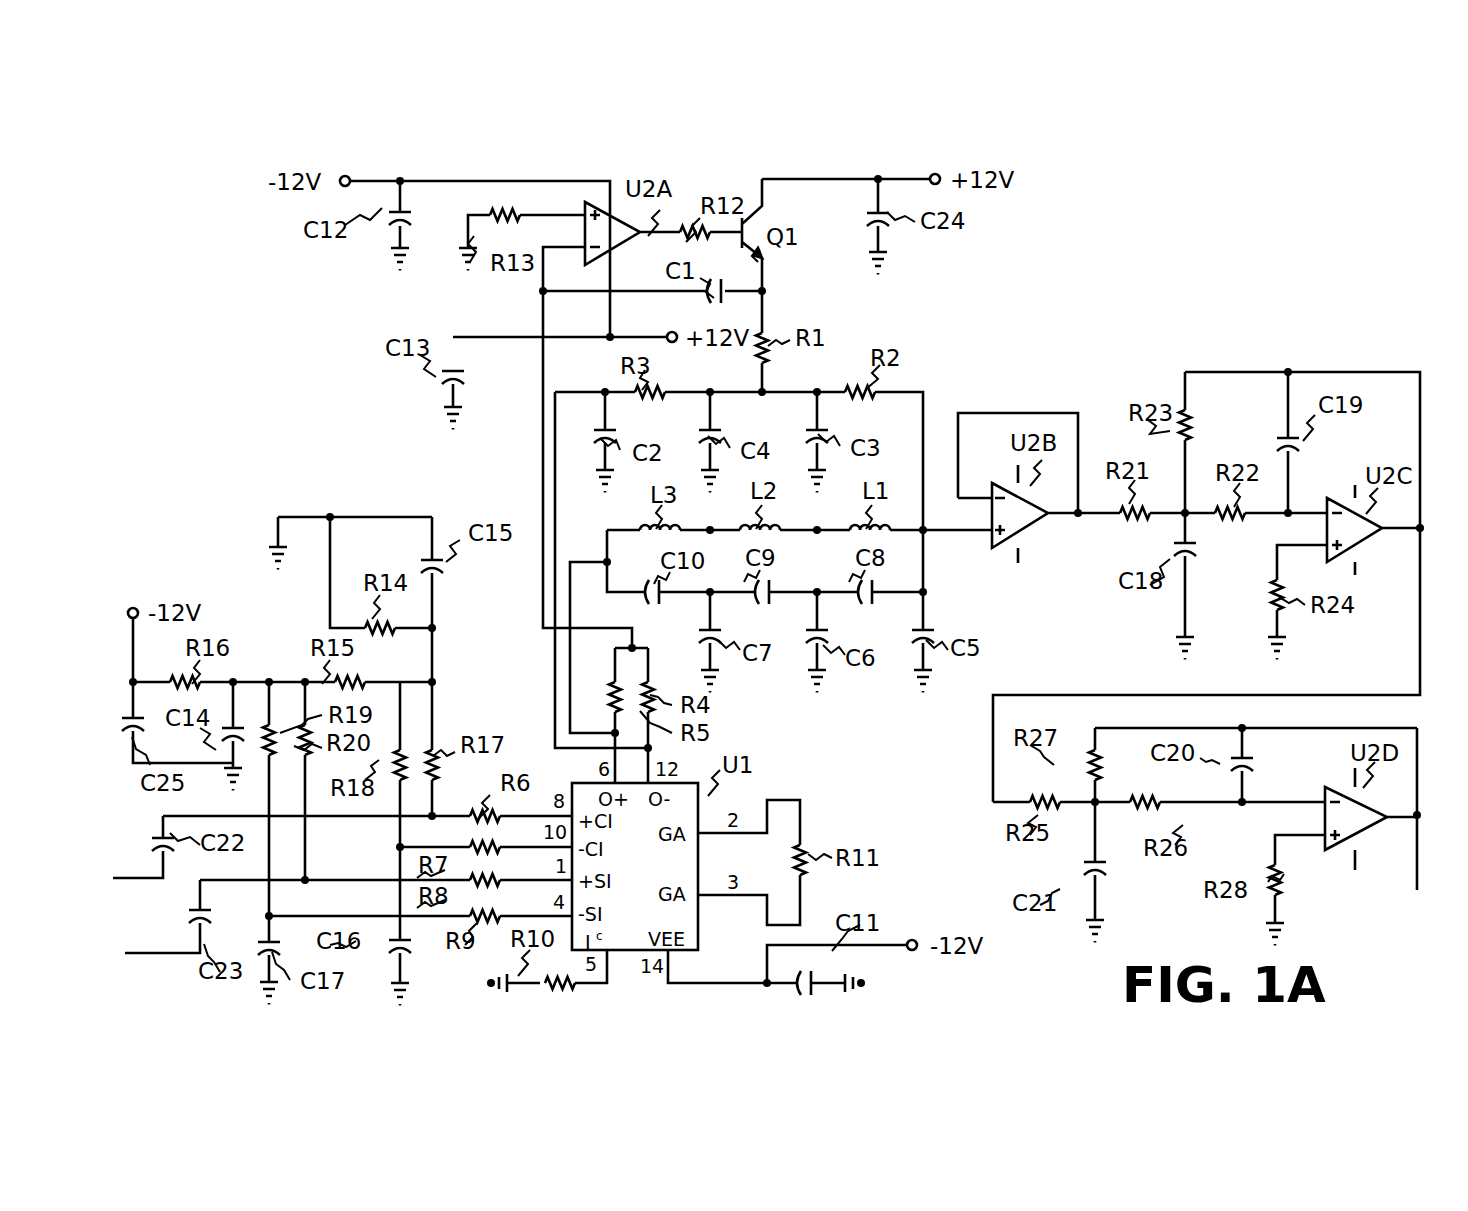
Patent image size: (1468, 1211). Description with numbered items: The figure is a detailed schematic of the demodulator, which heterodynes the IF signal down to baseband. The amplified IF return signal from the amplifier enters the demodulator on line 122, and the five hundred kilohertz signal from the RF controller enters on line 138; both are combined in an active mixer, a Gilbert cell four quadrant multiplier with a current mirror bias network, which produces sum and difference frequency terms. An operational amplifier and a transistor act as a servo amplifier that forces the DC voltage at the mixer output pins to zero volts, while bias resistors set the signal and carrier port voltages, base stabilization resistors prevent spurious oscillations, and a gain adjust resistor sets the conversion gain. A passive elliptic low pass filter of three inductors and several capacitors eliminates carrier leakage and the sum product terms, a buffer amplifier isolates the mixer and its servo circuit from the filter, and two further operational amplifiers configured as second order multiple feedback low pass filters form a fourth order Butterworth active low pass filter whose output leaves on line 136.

The line 138 is at (145, 880).
The line 122 is at (160, 953).
The output signal line 136 is at (1417, 868).